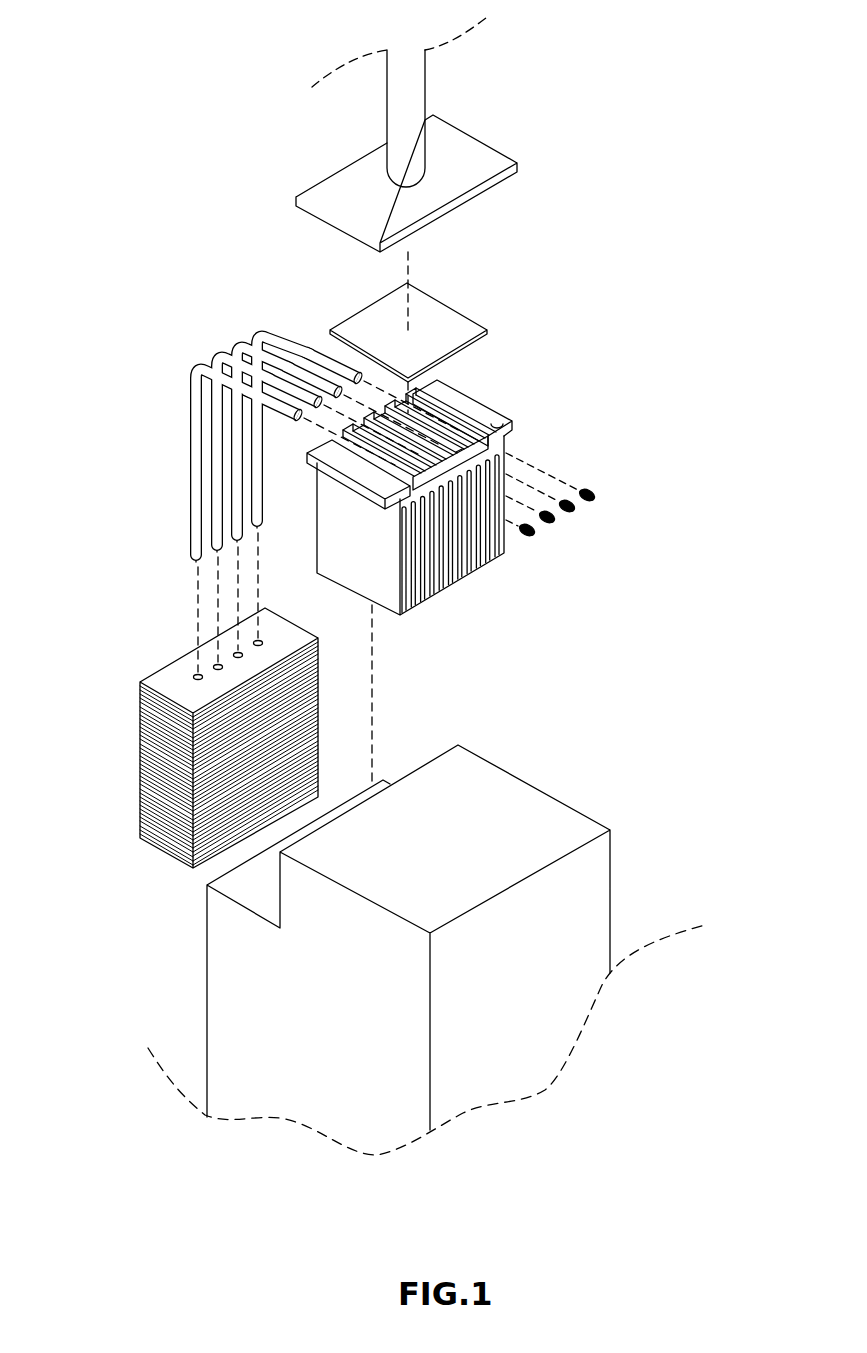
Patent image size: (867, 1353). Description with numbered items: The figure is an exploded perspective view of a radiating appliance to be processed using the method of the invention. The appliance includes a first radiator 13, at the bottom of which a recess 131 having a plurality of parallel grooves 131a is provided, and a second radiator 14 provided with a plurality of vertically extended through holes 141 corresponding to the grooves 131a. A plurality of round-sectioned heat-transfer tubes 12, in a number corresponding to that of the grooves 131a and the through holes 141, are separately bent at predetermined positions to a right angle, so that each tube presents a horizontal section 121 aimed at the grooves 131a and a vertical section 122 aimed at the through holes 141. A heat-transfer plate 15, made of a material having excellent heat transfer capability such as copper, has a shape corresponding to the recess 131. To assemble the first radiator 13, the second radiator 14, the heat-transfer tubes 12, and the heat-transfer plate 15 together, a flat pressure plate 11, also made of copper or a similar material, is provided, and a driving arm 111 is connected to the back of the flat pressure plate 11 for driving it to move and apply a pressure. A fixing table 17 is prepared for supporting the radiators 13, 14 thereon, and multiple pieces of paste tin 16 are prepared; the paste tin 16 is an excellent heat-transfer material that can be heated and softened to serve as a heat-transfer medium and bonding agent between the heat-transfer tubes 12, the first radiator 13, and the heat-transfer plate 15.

The flat pressure plate 11 is at (490, 163).
The driving arm 111 is at (413, 133).
The heat-transfer tubes 12 is at (296, 483).
The heat pipe horizontal sections 121 is at (322, 357).
The heat pipe vertical sections 122 is at (197, 557).
The first radiator 13 is at (468, 486).
The recess 131 is at (503, 428).
The grooves 131a is at (485, 450).
The second radiator 14 is at (207, 738).
The through holes 141 is at (193, 677).
The heat-transfer plate 15 is at (463, 323).
The paste tin 16 is at (597, 497).
The fixing table 17 is at (573, 823).